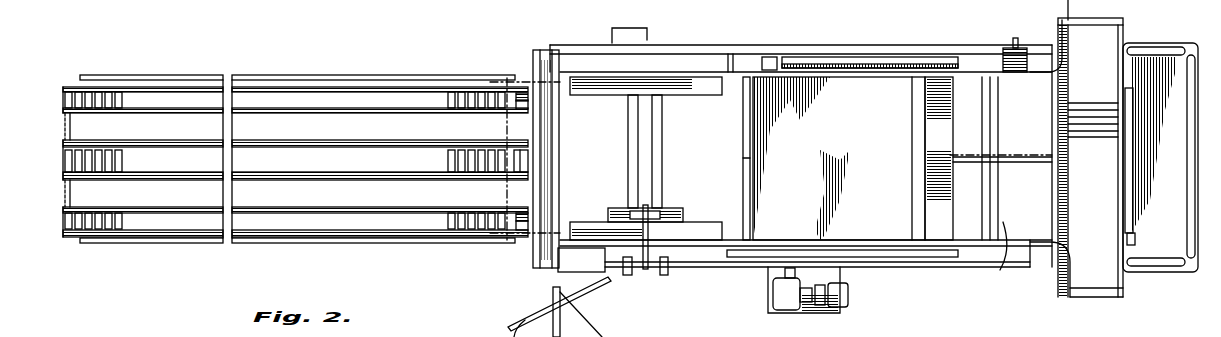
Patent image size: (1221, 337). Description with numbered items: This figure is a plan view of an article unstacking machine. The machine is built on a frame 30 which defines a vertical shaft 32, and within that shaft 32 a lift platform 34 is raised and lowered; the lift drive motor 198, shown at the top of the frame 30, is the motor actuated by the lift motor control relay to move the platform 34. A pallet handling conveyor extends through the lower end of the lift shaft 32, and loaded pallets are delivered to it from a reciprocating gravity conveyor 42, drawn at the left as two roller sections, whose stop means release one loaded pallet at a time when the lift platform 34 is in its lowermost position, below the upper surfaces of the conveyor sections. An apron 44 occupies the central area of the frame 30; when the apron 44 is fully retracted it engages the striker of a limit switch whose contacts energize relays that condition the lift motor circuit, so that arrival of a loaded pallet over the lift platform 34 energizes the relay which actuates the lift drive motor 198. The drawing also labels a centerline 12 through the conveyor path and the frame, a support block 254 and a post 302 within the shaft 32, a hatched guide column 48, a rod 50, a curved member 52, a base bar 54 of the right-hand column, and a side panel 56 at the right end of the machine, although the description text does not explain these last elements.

The conveying axis / centerline 12 is at (572, 190).
The frame 30 is at (948, 272).
The vertical shaft 32 is at (705, 156).
The lift platform 34 is at (623, 97).
The reciprocating gravity conveyor 42 is at (418, 247).
The apron 44 is at (868, 142).
The guide column 48 is at (940, 197).
The rod 50 is at (651, 270).
The curved member 52 is at (1000, 272).
The column base bar 54 is at (1112, 272).
The side panel 56 is at (1172, 217).
The lift drive motor 198 is at (640, 40).
The support block 254 is at (688, 198).
The post 302 is at (740, 125).